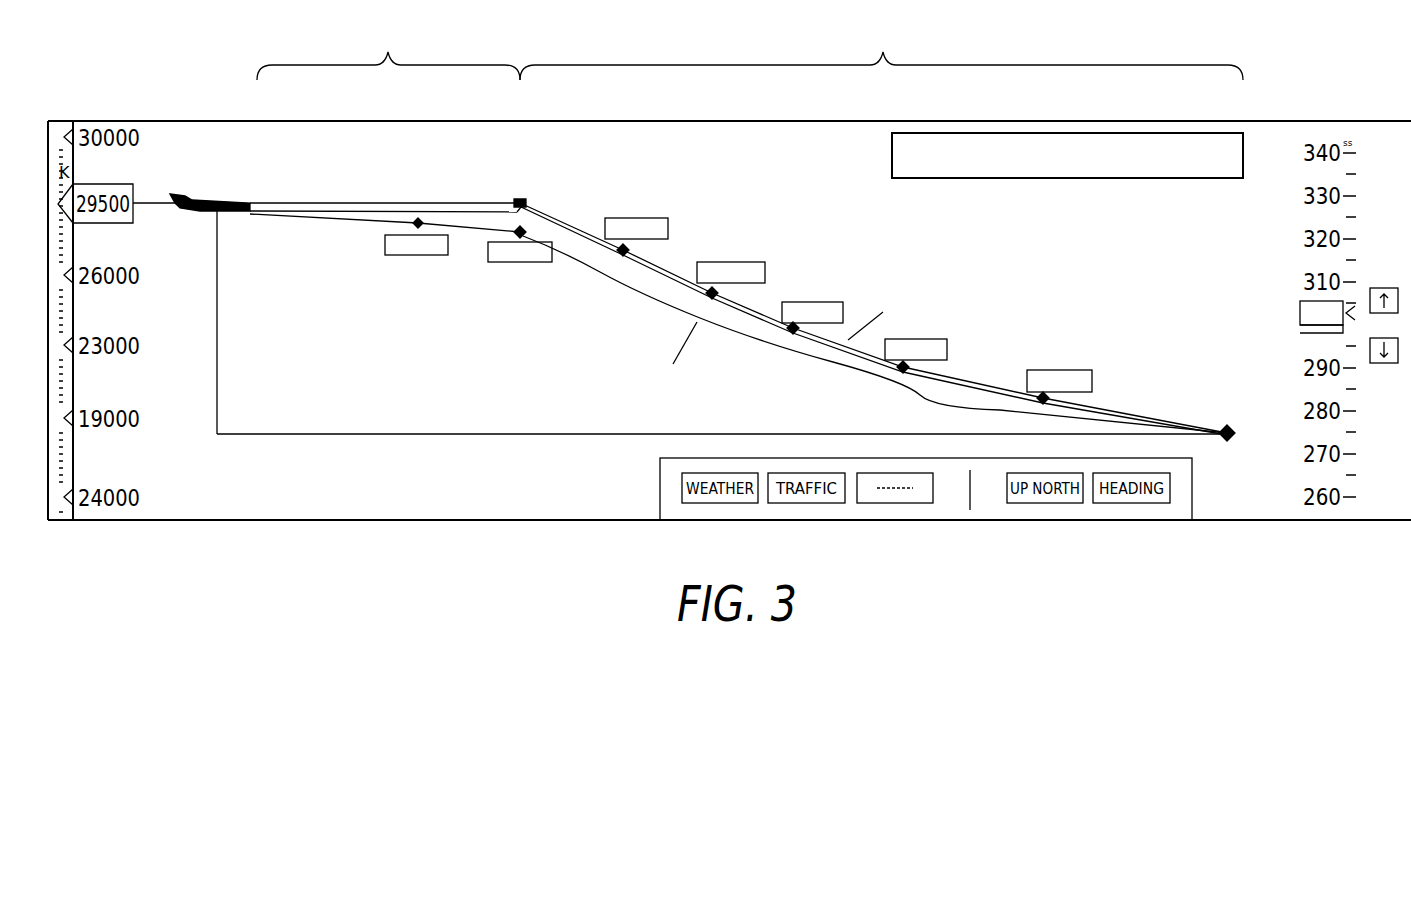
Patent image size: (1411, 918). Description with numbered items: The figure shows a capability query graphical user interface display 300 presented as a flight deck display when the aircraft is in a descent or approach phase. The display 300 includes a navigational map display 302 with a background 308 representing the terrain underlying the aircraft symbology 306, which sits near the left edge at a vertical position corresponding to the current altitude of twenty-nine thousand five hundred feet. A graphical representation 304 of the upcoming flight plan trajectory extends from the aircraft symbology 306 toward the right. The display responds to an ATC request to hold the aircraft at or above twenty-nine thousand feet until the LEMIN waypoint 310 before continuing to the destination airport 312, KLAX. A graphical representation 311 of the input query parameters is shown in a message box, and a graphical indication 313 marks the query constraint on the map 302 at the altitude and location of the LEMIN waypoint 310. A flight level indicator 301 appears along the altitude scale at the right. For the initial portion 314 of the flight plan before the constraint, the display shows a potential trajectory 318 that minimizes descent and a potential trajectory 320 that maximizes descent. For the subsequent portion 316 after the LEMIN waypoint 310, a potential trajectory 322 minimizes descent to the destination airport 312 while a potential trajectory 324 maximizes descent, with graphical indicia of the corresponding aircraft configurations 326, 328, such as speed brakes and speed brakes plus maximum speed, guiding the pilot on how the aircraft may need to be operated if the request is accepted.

The capability query graphical user interface display 300 is at (150, 120).
The flight level indicator box 301 is at (1410, 335).
The navigational map display 302 is at (845, 138).
The graphical representation of flight plan trajectory 304 is at (372, 222).
The aircraft symbology 306 is at (217, 199).
The background 308 is at (429, 487).
The LEMIN waypoint 310 is at (508, 240).
The graphical representation of input query parameters 311 is at (1132, 134).
The destination airport 312 is at (1230, 441).
The graphical indication of input query 313 is at (522, 199).
The initial portion of flight plan 314 is at (388, 51).
The subsequent portion of flight plan 316 is at (881, 51).
The potential trajectory that minimizes descent 318 is at (343, 200).
The potential trajectory that maximizes descent 320 is at (473, 214).
The potential trajectory that minimizes descent from constrained waypoint 322 is at (757, 308).
The potential trajectory that maximizes descent to destination airport 324 is at (665, 307).
The graphical indicia of aircraft configuration 326 is at (908, 295).
The graphical indicia of aircraft configuration 328 is at (635, 388).